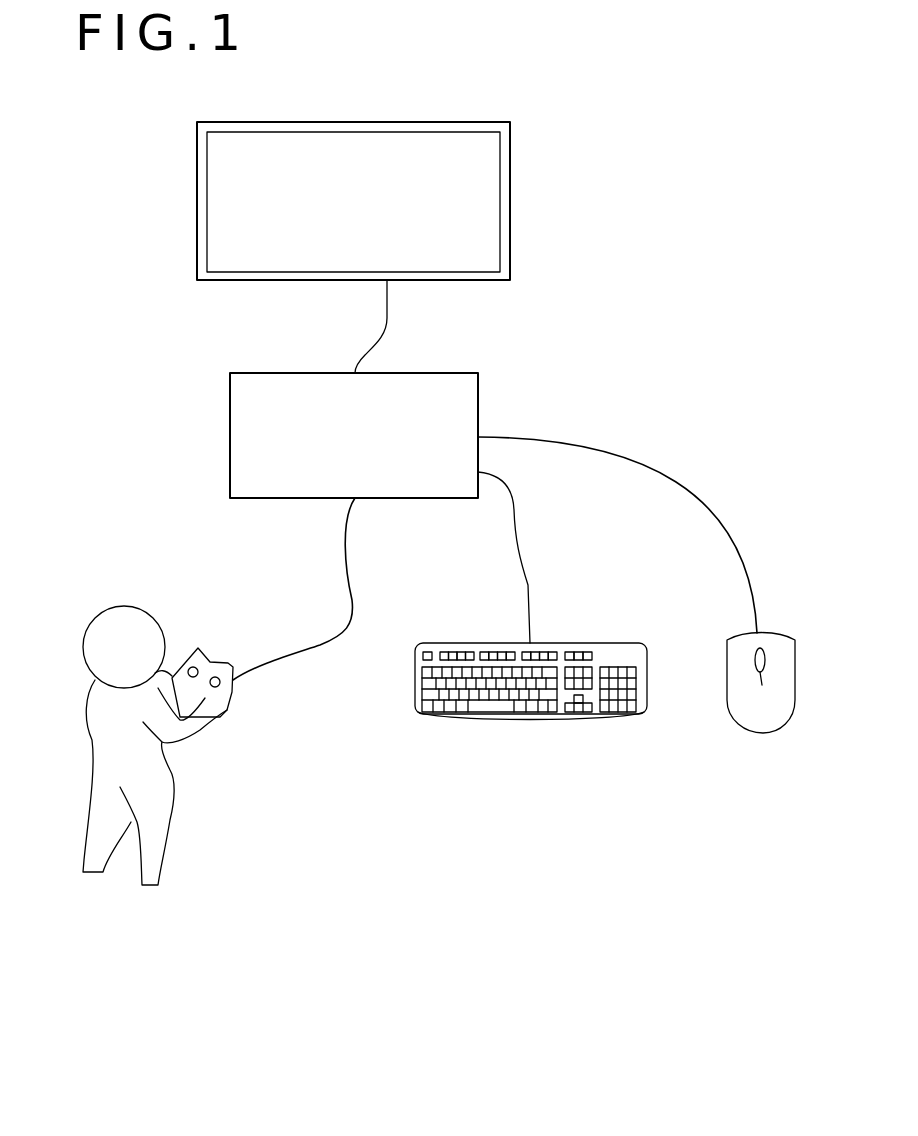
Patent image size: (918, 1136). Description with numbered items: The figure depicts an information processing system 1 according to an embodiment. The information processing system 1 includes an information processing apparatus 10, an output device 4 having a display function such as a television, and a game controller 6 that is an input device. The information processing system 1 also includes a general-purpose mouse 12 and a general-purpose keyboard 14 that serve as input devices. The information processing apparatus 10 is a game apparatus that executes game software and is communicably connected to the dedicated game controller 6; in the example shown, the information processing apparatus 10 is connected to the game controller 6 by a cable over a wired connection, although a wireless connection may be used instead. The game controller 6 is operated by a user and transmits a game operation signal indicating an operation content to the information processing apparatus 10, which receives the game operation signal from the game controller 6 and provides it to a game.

The information processing system 1 is at (447, 956).
The output device 4 is at (353, 122).
The game controller 6 is at (212, 658).
The information processing apparatus 10 is at (451, 370).
The general-purpose mouse 12 is at (768, 735).
The general-purpose keyboard 14 is at (612, 725).